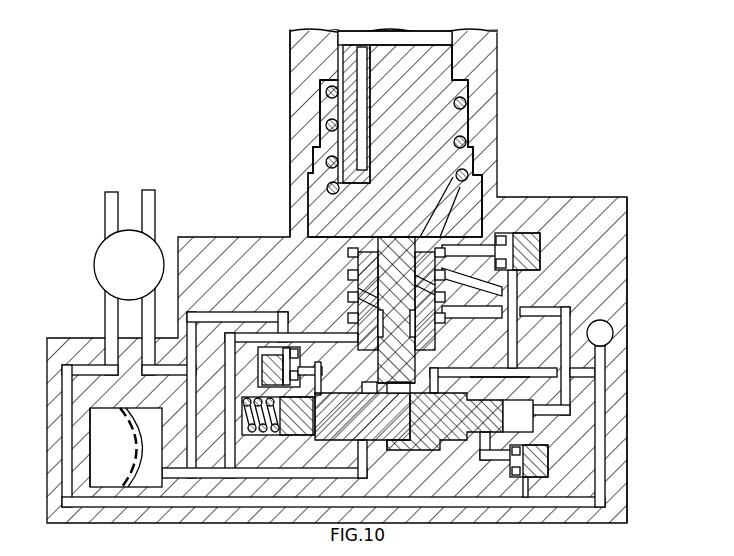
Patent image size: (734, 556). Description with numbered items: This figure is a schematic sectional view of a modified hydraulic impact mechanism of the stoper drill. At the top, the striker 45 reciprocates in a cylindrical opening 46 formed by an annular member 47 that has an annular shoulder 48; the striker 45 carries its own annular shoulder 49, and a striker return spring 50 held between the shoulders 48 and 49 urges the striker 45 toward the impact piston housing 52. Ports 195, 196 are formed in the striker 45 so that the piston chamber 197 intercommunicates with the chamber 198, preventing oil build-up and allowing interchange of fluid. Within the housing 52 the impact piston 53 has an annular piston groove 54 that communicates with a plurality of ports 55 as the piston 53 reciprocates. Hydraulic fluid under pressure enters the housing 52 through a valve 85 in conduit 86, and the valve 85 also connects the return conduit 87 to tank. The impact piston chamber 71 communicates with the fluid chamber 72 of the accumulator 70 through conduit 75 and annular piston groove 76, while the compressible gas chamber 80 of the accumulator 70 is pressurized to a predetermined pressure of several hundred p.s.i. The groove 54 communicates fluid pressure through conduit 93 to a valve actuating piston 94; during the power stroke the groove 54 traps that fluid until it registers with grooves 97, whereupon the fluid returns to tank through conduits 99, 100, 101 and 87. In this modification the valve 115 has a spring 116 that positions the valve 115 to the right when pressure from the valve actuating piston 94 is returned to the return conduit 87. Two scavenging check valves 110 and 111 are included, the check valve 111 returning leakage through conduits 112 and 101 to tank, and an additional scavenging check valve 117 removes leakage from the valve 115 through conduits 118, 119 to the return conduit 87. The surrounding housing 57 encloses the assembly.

The striker 45 is at (433, 75).
The cylindrical opening 46 is at (460, 31).
The annular member 47 is at (485, 92).
The annular shoulder 48 is at (318, 180).
The annular shoulder 49 is at (330, 82).
The striker return spring 50 is at (328, 125).
The impact piston housing 52 is at (556, 205).
The impact piston 53 is at (396, 310).
The annular piston groove 54 is at (396, 361).
The ports 55 is at (396, 306).
The housing 57 is at (300, 237).
The accumulator 70 is at (100, 408).
The impact piston chamber 71 is at (440, 370).
The fluid chamber 72 is at (140, 447).
The conduit 75 is at (370, 470).
The annular piston groove 76 is at (418, 395).
The compressible gas chamber 80 is at (126, 447).
The valve 85 is at (129, 265).
The conduit 86 is at (148, 300).
The return conduit 87 is at (110, 313).
The conduit 93 is at (566, 306).
The valve actuating piston 94 is at (528, 404).
The grooves 97 is at (352, 275).
The conduit 99 is at (497, 373).
The conduit 100 is at (606, 410).
The conduit 101 is at (285, 505).
The scavenging check valve 110 is at (525, 250).
The scavenging check valve 111 is at (545, 458).
The conduit 112 is at (527, 492).
The valve 115 is at (455, 440).
The spring 116 is at (264, 432).
The scavenging check valve 117 is at (272, 368).
The conduit 118 is at (250, 318).
The conduit 119 is at (322, 369).
The port 195 is at (362, 65).
The port 196 is at (466, 193).
The piston chamber 197 is at (345, 35).
The chamber 198 is at (463, 130).